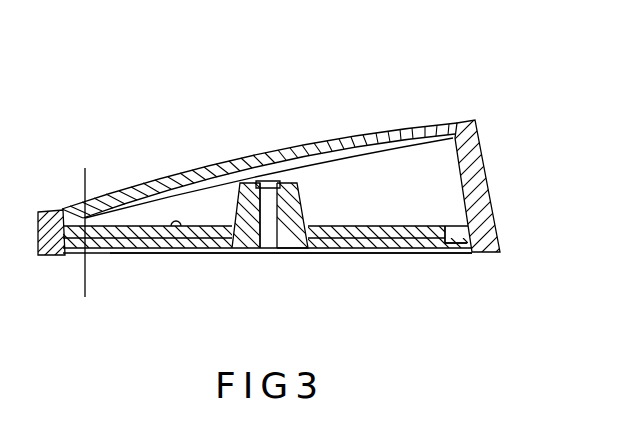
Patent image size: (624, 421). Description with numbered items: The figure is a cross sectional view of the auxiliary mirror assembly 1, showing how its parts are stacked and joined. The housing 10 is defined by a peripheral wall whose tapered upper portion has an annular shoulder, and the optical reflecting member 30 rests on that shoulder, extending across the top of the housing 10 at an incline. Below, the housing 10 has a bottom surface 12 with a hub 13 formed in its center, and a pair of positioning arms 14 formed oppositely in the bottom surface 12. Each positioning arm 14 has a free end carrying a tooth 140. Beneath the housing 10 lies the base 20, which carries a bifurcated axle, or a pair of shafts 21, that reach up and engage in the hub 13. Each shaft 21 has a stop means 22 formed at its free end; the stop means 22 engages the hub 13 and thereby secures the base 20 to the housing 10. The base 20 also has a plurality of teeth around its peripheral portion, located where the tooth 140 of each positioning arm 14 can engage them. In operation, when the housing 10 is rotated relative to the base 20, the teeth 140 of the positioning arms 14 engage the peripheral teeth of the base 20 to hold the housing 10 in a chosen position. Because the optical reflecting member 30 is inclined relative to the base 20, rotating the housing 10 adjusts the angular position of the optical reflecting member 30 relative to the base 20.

The auxiliary mirror assembly 1 is at (411, 93).
The housing 10 is at (480, 161).
The bottom surface 12 is at (172, 247).
The hub 13 is at (268, 223).
The positioning arms 14 is at (410, 231).
The base 20 is at (357, 244).
The shafts 21 is at (255, 179).
The stop means 22 is at (302, 172).
The optical reflecting member 30 is at (192, 167).
The tooth 140 is at (455, 234).